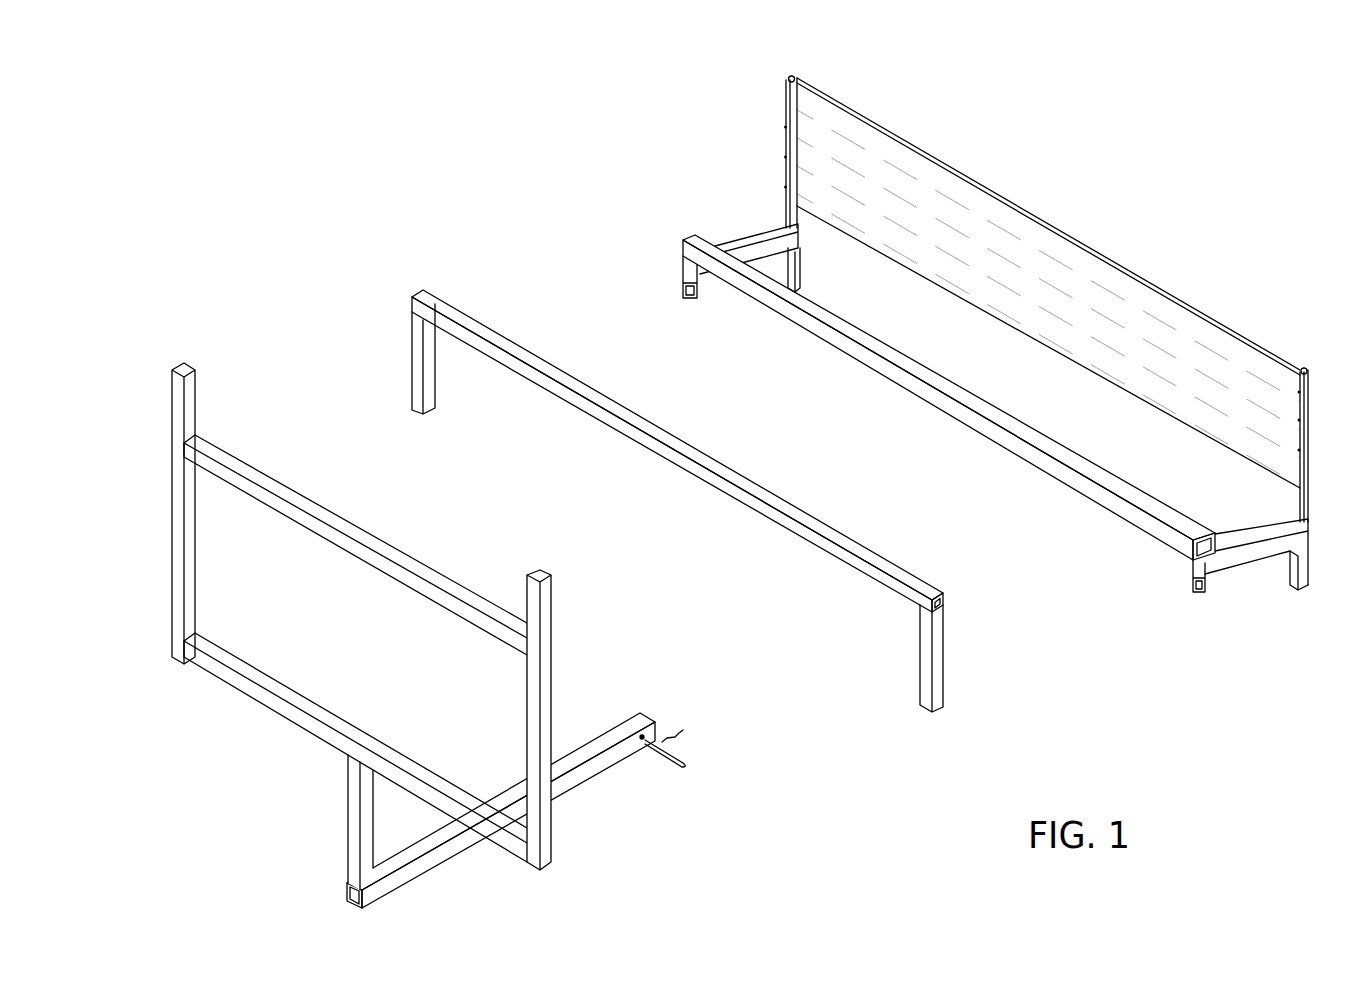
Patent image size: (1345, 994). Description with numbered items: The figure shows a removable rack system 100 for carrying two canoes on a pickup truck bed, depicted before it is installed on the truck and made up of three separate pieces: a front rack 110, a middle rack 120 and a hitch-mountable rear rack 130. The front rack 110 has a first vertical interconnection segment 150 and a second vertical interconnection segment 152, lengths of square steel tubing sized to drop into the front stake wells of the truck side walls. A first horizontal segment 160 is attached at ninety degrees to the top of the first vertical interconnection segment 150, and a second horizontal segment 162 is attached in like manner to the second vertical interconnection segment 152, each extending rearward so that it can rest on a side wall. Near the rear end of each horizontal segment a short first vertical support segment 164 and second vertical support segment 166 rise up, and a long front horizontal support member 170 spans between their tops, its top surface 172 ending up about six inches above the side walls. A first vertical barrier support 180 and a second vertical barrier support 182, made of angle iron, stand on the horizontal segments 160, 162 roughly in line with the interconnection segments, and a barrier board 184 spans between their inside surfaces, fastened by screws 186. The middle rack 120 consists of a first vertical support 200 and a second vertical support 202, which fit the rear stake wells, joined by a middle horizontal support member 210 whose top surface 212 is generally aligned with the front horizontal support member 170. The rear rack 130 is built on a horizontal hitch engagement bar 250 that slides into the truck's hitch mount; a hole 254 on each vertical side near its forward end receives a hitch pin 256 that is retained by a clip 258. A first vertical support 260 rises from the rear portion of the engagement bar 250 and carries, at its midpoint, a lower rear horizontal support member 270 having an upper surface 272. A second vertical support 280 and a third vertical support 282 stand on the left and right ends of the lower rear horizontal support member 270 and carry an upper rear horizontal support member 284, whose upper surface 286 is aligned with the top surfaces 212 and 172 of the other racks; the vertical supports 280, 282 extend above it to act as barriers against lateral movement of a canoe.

The removable rack system 100 is at (285, 268).
The front rack 110 is at (655, 200).
The middle rack 120 is at (965, 722).
The hitch-mountable rear rack 130 is at (595, 847).
The first vertical interconnection segment 150 is at (1290, 570).
The second vertical interconnection segment 152 is at (797, 266).
The first horizontal segment 160 is at (1233, 558).
The second horizontal segment 162 is at (738, 252).
The first vertical support segment 164 is at (1205, 563).
The second vertical support segment 166 is at (687, 273).
The front horizontal support member 170 is at (949, 397).
The top surface 172 is at (947, 381).
The first vertical barrier support 180 is at (1304, 374).
The second vertical barrier support 182 is at (785, 82).
The barrier board 184 is at (1082, 354).
The screws 186 is at (802, 97).
The first vertical support 200 is at (932, 648).
The second vertical support 202 is at (418, 350).
The middle horizontal support member 210 is at (677, 451).
The top surface 212 is at (727, 462).
The horizontal hitch engagement bar 250 is at (587, 753).
The hole 254 is at (648, 736).
The hitch pin 256 is at (672, 762).
The clip 258 is at (677, 733).
The first vertical support 260 is at (357, 808).
The lower rear horizontal support member 270 is at (355, 747).
The upper surface 272 is at (316, 717).
The second vertical support 280 is at (178, 515).
The third vertical support 282 is at (537, 703).
The upper rear horizontal support member 284 is at (355, 545).
The upper surface 286 is at (302, 500).